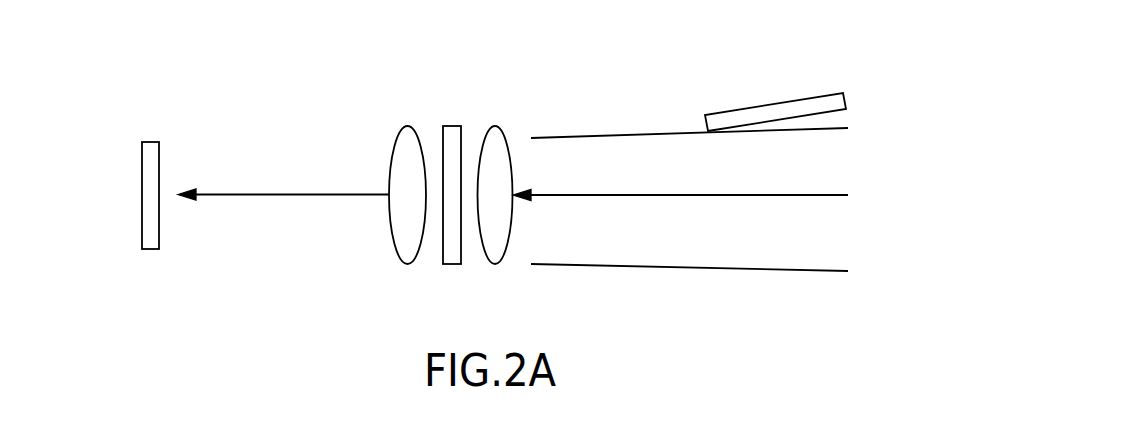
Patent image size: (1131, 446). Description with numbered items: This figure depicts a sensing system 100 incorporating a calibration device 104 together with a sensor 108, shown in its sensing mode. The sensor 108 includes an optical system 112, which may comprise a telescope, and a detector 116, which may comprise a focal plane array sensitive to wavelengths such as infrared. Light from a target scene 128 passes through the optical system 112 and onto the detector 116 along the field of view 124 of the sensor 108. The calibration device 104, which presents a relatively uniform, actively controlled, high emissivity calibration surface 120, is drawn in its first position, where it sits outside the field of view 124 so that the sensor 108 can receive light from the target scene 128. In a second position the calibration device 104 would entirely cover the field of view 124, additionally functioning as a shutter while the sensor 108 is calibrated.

The sensing system 100 is at (212, 78).
The calibration device 104 is at (790, 98).
The sensor 108 is at (368, 124).
The optical system 112 is at (492, 125).
The detector 116 is at (141, 154).
The calibration surface 120 is at (836, 111).
The field of view 124 is at (662, 131).
The target scene 128 is at (1023, 199).